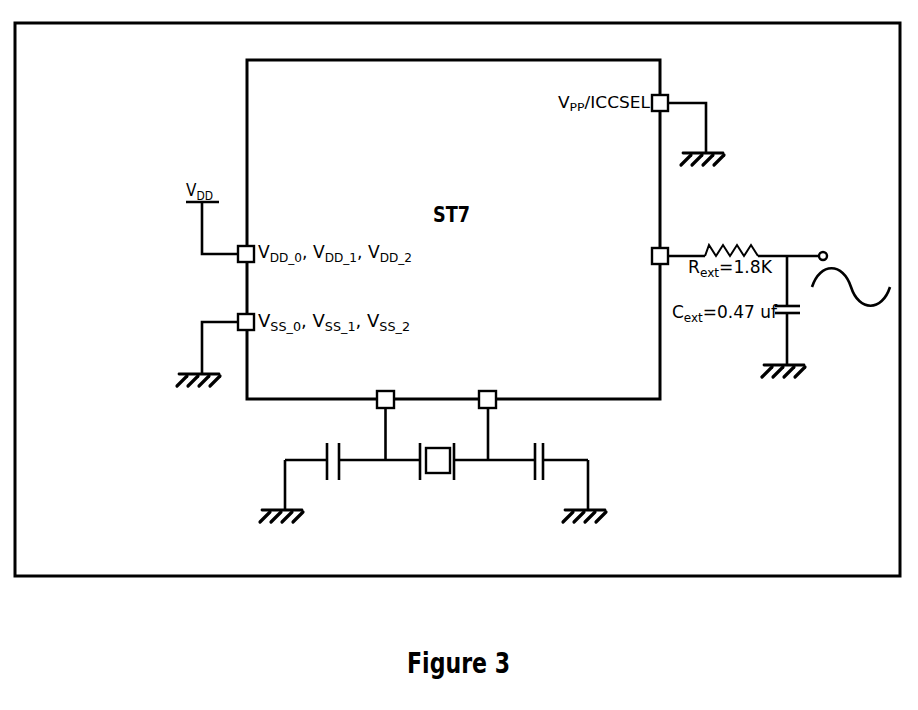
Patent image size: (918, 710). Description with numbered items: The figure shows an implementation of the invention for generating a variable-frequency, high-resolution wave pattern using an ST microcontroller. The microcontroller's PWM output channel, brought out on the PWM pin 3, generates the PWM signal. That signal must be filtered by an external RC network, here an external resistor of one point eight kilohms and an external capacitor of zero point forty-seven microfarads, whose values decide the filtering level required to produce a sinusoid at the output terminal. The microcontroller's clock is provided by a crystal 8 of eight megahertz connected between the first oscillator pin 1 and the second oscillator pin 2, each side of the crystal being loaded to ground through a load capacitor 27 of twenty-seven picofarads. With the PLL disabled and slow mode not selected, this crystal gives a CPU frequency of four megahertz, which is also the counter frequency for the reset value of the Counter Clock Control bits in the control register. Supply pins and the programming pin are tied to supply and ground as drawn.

The 27 pF load capacitor 27 is at (431, 473).
The 8 MHz crystal 8 is at (431, 471).
The OSC1 oscillator pin 1 is at (385, 388).
The OSC2 oscillator pin 2 is at (489, 388).
The PWM0/PB3 output pin 3 is at (615, 257).